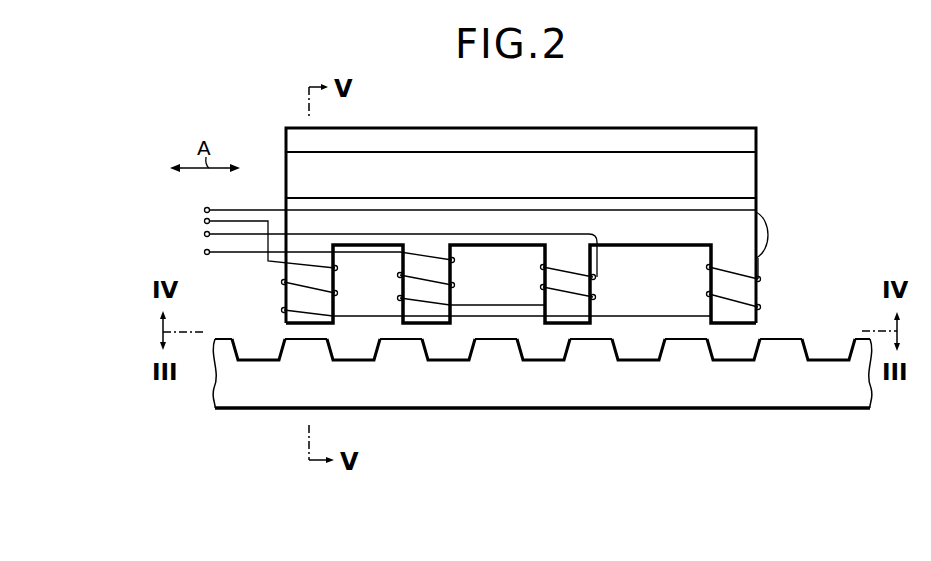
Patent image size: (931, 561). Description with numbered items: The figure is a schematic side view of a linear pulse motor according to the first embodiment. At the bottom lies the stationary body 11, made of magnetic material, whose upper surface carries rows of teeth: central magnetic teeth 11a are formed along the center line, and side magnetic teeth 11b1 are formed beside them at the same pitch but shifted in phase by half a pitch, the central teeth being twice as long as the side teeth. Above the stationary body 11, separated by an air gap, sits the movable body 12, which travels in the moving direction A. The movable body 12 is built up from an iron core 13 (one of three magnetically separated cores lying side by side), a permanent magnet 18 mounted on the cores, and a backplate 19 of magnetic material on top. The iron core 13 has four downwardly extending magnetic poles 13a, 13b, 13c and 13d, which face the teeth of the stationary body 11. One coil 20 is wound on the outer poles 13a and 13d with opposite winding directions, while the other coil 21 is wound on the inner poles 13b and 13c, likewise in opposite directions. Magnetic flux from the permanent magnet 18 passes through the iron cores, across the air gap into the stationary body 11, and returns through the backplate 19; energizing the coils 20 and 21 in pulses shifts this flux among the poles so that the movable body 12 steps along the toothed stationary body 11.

The stationary body 11 is at (825, 402).
The central magnetic teeth 11a is at (640, 336).
The side magnetic teeth 11b1 is at (598, 349).
The movable body 12 is at (763, 119).
The iron core 13 is at (705, 225).
The magnetic pole 13a is at (304, 318).
The magnetic pole 13b is at (430, 323).
The magnetic pole 13c is at (555, 323).
The magnetic pole 13d is at (742, 320).
The permanent magnet 18 is at (742, 184).
The backplate 19 is at (565, 136).
The coil 20 is at (465, 241).
The coil 21 is at (380, 252).